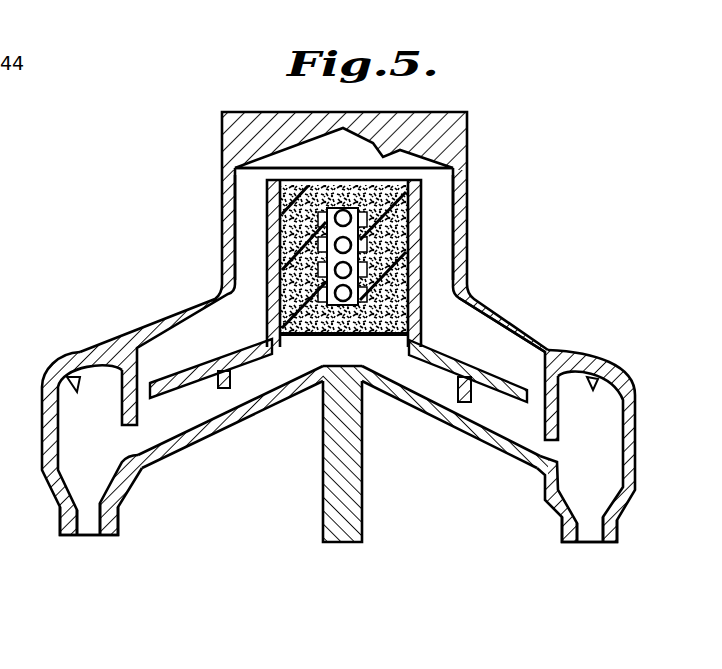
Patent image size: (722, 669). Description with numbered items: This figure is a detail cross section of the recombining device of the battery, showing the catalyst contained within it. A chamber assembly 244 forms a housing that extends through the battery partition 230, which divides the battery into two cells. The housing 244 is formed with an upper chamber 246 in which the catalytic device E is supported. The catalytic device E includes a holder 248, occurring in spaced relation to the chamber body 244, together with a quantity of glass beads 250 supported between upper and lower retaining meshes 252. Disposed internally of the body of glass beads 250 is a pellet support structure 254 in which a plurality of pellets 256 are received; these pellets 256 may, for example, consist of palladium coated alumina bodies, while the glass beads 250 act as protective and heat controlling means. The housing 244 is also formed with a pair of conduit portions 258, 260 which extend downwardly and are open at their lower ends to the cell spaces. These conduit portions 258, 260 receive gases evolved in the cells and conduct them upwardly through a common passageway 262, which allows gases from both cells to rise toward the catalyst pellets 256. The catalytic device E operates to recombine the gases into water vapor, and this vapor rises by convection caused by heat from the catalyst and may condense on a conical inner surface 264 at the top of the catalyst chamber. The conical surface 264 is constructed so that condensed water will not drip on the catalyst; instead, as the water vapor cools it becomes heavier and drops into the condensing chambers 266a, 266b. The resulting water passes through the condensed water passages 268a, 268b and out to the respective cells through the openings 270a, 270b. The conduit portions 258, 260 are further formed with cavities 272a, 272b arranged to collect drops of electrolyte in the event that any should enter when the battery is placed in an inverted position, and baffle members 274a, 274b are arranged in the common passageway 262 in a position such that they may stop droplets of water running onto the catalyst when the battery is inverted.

The battery partition 230 is at (350, 446).
The chamber assembly 244 is at (457, 164).
The upper chamber 246 is at (431, 198).
The holder 248 is at (413, 252).
The glass beads 250 is at (318, 225).
The retaining meshes 252 is at (320, 336).
The pellet support structure 254 is at (350, 280).
The pellets 256 is at (337, 245).
The conduit portion 258 is at (52, 433).
The conduit portion 260 is at (632, 408).
The common passageway 262 is at (443, 347).
The conical inner surface 264 is at (459, 140).
The condensing chamber 266a is at (253, 250).
The condensing chamber 266b is at (433, 220).
The condensed water passage 268a is at (173, 350).
The condensed water passage 268b is at (510, 353).
The opening 270a is at (88, 520).
The opening 270b is at (592, 527).
The cavity 272a is at (76, 389).
The cavity 272b is at (594, 384).
The baffle member 274a is at (228, 389).
The baffle member 274b is at (465, 402).
The catalytic device E is at (424, 267).